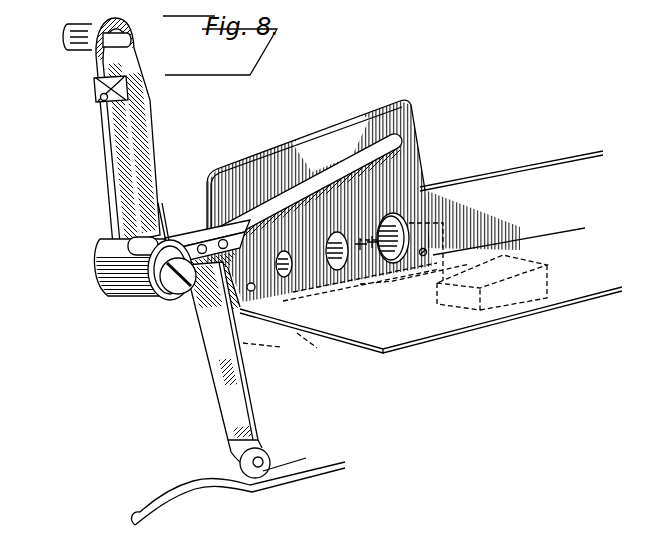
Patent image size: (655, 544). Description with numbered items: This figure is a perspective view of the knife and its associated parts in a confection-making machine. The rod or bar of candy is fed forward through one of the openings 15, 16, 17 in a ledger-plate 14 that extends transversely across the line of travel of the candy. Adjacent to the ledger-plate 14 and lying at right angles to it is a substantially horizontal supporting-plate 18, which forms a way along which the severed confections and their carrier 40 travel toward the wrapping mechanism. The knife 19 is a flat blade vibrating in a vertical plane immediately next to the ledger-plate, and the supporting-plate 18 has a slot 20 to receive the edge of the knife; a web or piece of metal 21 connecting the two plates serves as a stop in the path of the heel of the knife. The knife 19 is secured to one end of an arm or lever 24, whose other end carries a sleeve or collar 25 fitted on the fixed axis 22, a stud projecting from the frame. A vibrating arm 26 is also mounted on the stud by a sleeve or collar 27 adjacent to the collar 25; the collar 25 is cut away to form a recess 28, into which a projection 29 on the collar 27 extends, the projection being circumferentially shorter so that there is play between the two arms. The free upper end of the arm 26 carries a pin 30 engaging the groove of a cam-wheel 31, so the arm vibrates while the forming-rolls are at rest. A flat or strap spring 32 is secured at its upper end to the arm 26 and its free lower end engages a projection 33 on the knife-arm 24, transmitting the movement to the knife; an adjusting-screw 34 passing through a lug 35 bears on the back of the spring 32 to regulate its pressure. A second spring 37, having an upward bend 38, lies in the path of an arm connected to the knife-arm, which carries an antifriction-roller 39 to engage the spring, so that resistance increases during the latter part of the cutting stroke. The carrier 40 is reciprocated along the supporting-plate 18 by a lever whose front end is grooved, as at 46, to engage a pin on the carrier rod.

The ledger-plate 14 is at (556, 163).
The opening 15 is at (287, 278).
The opening 16 is at (342, 271).
The opening 17 is at (408, 218).
The supporting-plate 18 is at (450, 331).
The knife 19 is at (308, 140).
The slot 20 is at (367, 285).
The web or piece of metal 21 is at (251, 291).
The fixed axis 22 is at (180, 296).
The arm or lever 24 is at (196, 237).
The sleeve or collar 25 is at (150, 294).
The vibrating arm 26 is at (120, 131).
The sleeve or collar 27 is at (106, 262).
The recess 28 is at (130, 246).
The projection 29 is at (118, 286).
The pin 30 is at (66, 38).
The cam-wheel 31 is at (133, 38).
The flat or strap spring 32 is at (143, 147).
The projection 33 is at (168, 212).
The adjusting-screw 34 is at (101, 99).
The lug 35 is at (128, 85).
The spring 37 is at (292, 461).
The upward bend 38 is at (200, 478).
The antifriction-roller 39 is at (250, 480).
The carrier 40 is at (301, 334).
The groove 46 is at (365, 152).